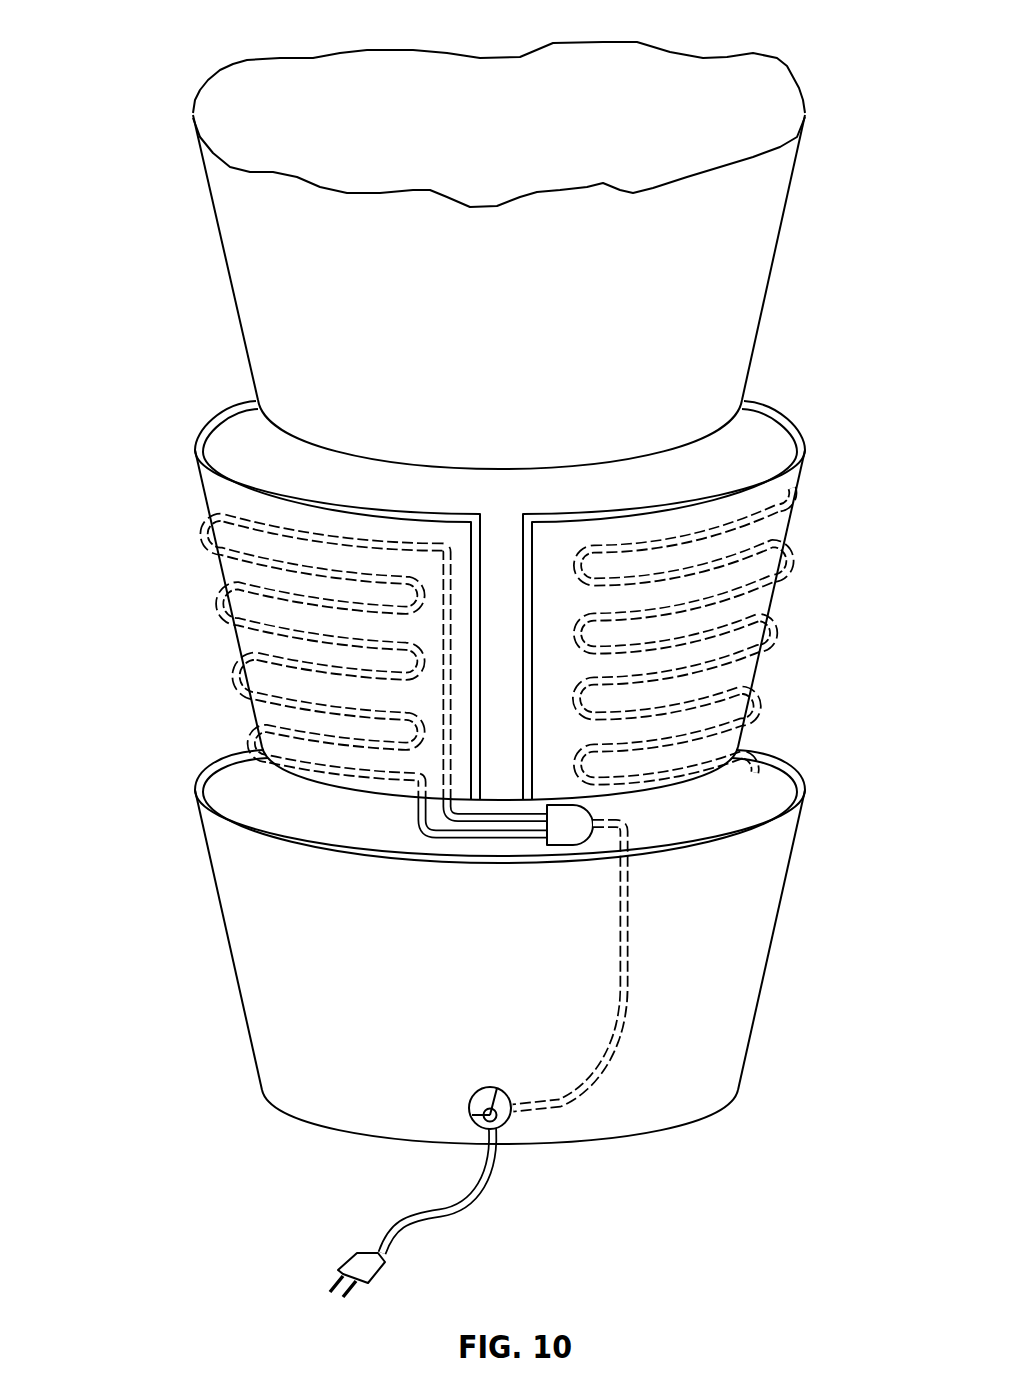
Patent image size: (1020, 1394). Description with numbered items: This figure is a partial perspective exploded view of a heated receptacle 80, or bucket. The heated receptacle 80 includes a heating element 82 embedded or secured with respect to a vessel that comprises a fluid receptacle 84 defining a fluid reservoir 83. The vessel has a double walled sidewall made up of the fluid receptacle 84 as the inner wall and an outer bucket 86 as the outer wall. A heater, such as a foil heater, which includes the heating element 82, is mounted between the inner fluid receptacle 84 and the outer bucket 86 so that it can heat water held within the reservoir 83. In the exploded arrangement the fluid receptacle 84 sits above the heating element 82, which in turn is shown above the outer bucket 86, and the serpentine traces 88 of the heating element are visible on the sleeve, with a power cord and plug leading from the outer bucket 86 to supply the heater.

The heated receptacle 80 is at (158, 46).
The heating element 82 is at (767, 667).
The fluid reservoir 83 is at (745, 70).
The fluid receptacle 84 is at (743, 305).
The outer bucket 86 is at (745, 1005).
The heating element traces 88 is at (760, 595).